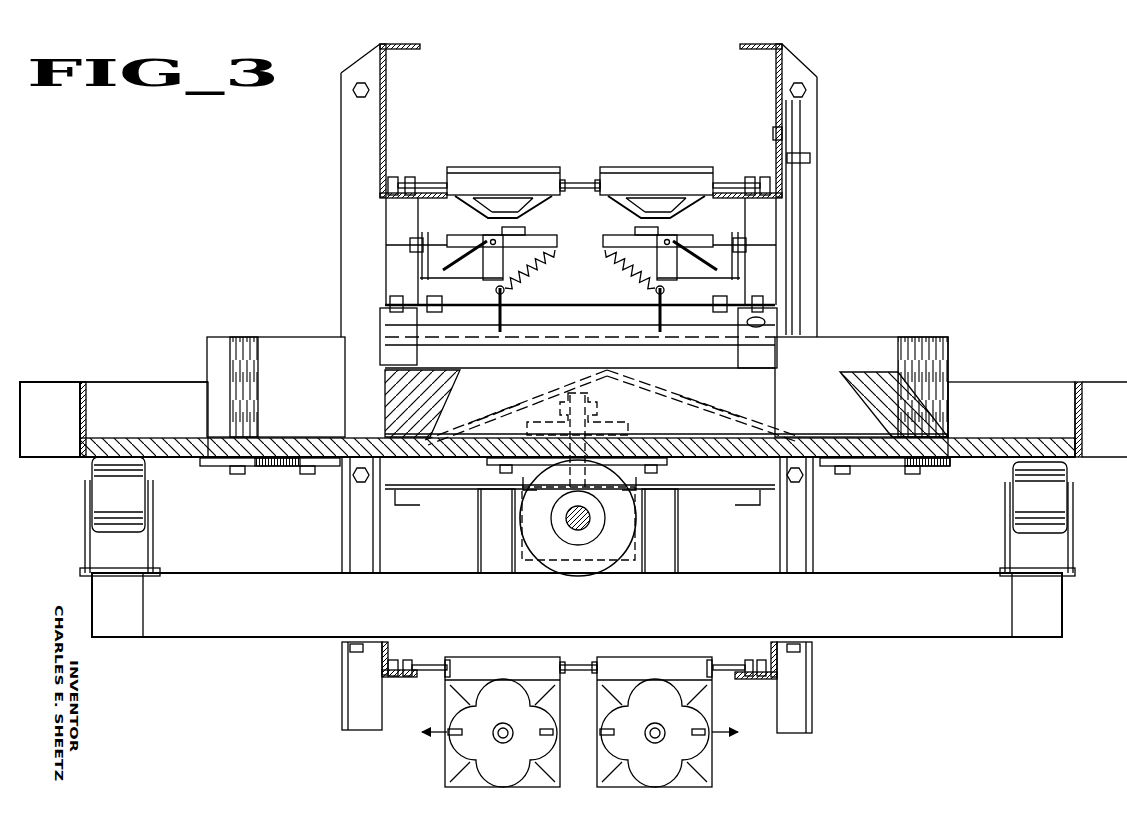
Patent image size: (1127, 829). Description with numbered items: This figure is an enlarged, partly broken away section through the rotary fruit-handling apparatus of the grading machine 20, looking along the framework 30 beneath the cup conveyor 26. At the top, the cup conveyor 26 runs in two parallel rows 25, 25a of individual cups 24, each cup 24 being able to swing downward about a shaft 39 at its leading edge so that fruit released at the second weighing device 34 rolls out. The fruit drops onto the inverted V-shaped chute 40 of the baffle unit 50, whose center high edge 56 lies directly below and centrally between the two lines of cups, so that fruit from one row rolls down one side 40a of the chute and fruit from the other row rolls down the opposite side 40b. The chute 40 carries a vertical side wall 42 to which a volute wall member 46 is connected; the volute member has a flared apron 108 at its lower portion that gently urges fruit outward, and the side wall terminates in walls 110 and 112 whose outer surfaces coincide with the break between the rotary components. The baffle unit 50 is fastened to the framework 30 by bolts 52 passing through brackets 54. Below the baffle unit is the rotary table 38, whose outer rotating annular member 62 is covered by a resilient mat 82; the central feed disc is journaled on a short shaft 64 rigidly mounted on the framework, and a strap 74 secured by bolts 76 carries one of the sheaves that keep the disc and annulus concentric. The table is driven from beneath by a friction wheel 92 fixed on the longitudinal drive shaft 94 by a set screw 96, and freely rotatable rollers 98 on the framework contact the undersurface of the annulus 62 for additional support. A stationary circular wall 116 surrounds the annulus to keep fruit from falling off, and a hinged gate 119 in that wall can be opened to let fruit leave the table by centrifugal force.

The grading machine 20 is at (245, 272).
The cup 24 is at (633, 172).
The row of cups 25 is at (492, 163).
The row of cups 25a is at (668, 162).
The cup conveyor 26 is at (528, 152).
The framework 30 is at (391, 150).
The second weighing device 34 is at (820, 257).
The rotary table 38 is at (170, 382).
The shaft 39 is at (432, 183).
The inverted V-shaped chute 40 is at (625, 380).
The side of chute 40a is at (450, 412).
The opposite side of chute 40b is at (708, 412).
The vertical side wall 42 is at (580, 332).
The volute wall member 46 is at (666, 403).
The baffle unit 50 is at (830, 340).
The bolt 52 is at (748, 322).
The bracket 54 is at (405, 370).
The center high edge 56 is at (586, 378).
The annular member 62 is at (480, 455).
The short shaft 64 is at (620, 405).
The strap 74 is at (262, 468).
The bolt 76 is at (238, 472).
The resilient mat 82 is at (450, 436).
The friction wheel 92 is at (578, 518).
The drive shaft 94 is at (567, 523).
The set screw 96 is at (610, 518).
The roller 98 is at (122, 495).
The flared apron 108 is at (893, 400).
The wall 110 is at (878, 345).
The wall 112 is at (276, 387).
The circular wall 116 is at (1102, 398).
The hinged gate 119 is at (1012, 408).